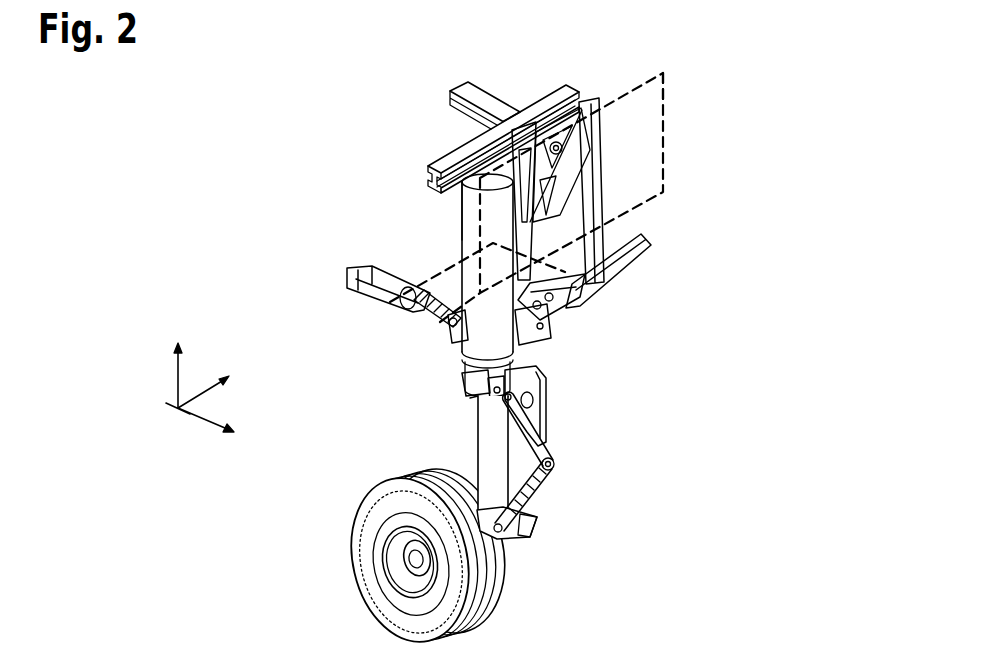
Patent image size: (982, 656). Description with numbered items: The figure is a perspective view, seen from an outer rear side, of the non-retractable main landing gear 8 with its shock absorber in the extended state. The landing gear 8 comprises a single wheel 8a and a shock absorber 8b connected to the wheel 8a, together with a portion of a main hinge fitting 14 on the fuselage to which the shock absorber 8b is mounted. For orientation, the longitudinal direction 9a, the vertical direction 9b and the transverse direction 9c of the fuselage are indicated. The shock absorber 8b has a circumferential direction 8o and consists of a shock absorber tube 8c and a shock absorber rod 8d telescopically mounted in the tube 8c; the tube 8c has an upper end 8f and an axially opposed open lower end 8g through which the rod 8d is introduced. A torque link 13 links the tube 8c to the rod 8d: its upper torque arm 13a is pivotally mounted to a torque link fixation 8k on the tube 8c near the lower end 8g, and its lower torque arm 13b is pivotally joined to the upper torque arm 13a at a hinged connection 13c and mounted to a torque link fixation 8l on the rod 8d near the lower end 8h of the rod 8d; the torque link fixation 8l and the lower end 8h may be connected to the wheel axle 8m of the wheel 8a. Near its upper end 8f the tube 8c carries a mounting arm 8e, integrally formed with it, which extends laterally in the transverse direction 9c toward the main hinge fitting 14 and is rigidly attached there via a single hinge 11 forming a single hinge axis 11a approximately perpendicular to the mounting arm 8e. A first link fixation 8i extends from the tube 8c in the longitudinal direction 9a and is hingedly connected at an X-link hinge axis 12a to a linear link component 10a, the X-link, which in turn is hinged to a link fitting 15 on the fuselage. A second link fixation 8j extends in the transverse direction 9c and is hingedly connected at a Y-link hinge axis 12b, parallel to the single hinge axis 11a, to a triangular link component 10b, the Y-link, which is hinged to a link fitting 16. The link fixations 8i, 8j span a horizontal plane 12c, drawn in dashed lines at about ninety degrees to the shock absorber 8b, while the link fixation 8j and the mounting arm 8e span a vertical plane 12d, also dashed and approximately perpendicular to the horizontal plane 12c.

The main landing gear 8 is at (513, 336).
The single wheel 8a is at (392, 555).
The shock absorber 8b is at (456, 399).
The shock absorber tube 8c is at (445, 232).
The shock absorber rod 8d is at (493, 447).
The mounting arm 8e is at (532, 216).
The upper end 8f is at (488, 178).
The lower end 8g is at (488, 402).
The lower end 8h is at (508, 549).
The first link fixation 8i is at (458, 336).
The second link fixation 8j is at (545, 351).
The torque link fixation 8k is at (469, 378).
The torque link fixation 8l is at (519, 539).
The wheel axle 8m is at (417, 563).
The circumferential direction 8o is at (453, 203).
The longitudinal direction 9a is at (190, 413).
The vertical direction 9b is at (177, 373).
The transverse direction 9c is at (200, 388).
The linear link component 10a is at (440, 318).
The triangular link component 10b is at (565, 308).
The single hinge 11 is at (636, 160).
The single hinge axis 11a is at (562, 145).
The X-link hinge axis 12a is at (444, 323).
The Y-link hinge axis 12b is at (545, 326).
The horizontal plane 12c is at (598, 228).
The vertical plane 12d is at (663, 90).
The torque link 13 is at (589, 473).
The upper torque arm 13a is at (537, 432).
The lower torque arm 13b is at (528, 503).
The hinged connection 13c is at (544, 475).
The main hinge fitting 14 is at (537, 93).
The link fitting 15 is at (353, 266).
The link fitting 16 is at (655, 252).